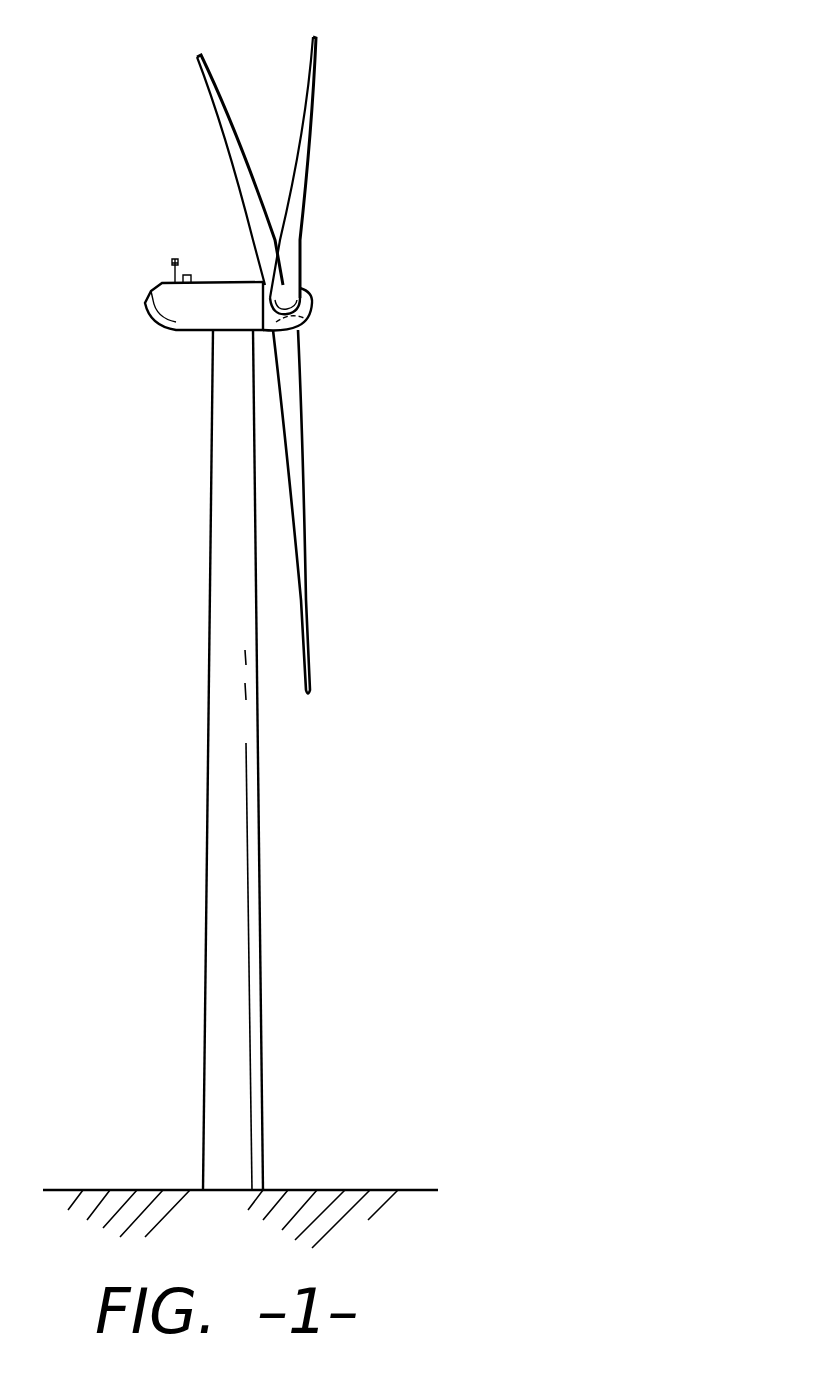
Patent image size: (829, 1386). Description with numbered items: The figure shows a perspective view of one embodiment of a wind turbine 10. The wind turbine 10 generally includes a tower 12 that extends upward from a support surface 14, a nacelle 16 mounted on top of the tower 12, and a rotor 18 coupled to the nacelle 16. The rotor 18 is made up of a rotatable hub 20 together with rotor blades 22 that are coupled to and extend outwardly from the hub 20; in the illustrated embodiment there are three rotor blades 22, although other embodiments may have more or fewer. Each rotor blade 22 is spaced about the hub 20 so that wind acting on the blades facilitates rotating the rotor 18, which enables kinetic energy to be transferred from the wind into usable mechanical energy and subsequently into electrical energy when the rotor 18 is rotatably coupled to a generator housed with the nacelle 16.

The wind turbine 10 is at (428, 140).
The tower 12 is at (218, 878).
The support surface 14 is at (332, 1190).
The nacelle 16 is at (190, 333).
The rotor 18 is at (333, 317).
The rotatable hub 20 is at (323, 303).
The rotor blade 22 is at (222, 138).